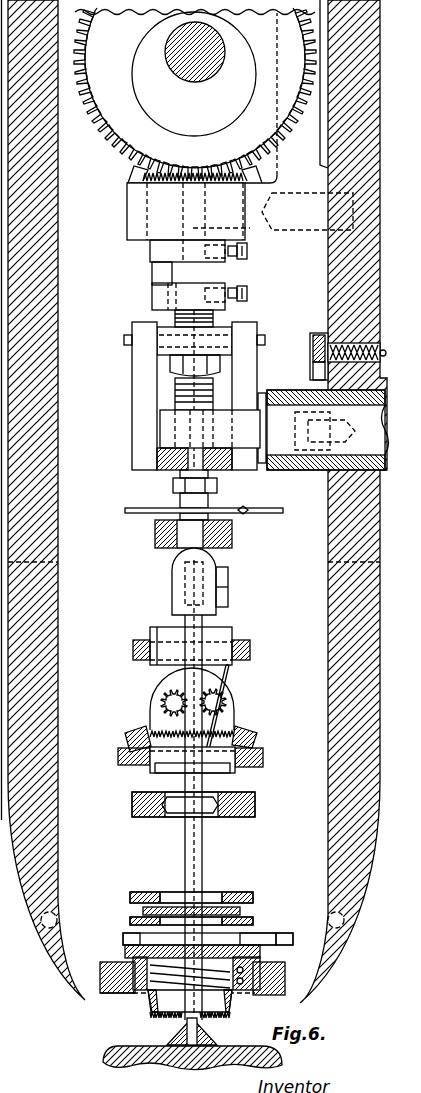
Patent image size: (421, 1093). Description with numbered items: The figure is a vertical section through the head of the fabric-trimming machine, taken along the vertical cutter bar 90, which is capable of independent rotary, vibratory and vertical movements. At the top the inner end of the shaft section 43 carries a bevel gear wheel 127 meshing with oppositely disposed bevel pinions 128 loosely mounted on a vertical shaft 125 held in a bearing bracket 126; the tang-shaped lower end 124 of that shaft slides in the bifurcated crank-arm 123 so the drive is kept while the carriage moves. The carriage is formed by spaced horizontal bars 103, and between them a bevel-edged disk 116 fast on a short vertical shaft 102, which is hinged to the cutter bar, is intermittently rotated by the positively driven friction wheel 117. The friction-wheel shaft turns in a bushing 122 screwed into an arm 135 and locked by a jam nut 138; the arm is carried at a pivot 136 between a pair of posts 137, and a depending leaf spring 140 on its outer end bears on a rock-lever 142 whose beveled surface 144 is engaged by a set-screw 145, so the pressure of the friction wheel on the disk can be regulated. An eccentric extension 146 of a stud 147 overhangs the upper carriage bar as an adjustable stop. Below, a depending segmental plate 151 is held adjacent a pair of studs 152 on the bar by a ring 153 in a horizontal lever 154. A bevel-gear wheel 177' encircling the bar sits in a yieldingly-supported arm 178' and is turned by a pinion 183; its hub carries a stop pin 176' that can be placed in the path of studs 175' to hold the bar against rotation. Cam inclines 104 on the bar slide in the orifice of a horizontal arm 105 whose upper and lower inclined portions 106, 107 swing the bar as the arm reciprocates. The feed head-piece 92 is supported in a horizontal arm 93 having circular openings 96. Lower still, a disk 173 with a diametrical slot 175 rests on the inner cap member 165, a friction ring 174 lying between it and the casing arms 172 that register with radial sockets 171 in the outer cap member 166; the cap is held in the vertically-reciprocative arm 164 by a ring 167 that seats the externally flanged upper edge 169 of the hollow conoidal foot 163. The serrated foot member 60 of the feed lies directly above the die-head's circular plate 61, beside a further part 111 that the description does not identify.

The shaft section 43 is at (191, 74).
The bevel gear wheel 127 is at (118, 135).
The bevel pinions 128 is at (133, 176).
The bearing bracket 126 is at (133, 222).
The vertical shaft 125 is at (252, 239).
The tang-shaped lower end 124 is at (152, 272).
The crank-arm 123 is at (152, 300).
The arm 135 is at (172, 340).
The pivot 136 is at (125, 340).
The posts 137 is at (135, 392).
The jam nut 138 is at (182, 360).
The bushing 122 is at (184, 395).
The eccentric extension 146 is at (184, 426).
The rock-lever 142 is at (321, 336).
The set-screw 145 is at (313, 352).
The beveled surface 144 is at (318, 372).
The stud 147 is at (325, 470).
The horizontal bars of the carriage 103 is at (168, 473).
The friction wheel 117 is at (158, 510).
The bevel-edged disk 116 is at (160, 520).
The short vertical shaft 102 is at (186, 551).
The ring 153 is at (150, 632).
The horizontal lever 154 is at (251, 646).
The depending segmental plate 151 is at (230, 697).
The pinion 183 is at (160, 703).
The studs 152 is at (186, 737).
The bevel-gear wheel 177' is at (217, 728).
The stop pin 176' is at (111, 755).
The yieldingly-supported arm 178' is at (276, 754).
The studs 175' is at (231, 768).
The horizontal arm 105 is at (256, 803).
The upper inclined portion 106 is at (170, 793).
The lower inclined portion 107 is at (168, 815).
The cam inclines 104 is at (203, 820).
The horizontal arm 93 is at (154, 892).
The circular openings 96 is at (175, 892).
The diametrical slot 175 is at (192, 890).
The radial sockets 171 is at (142, 937).
The disk 173 is at (254, 920).
The head-piece 92 is at (247, 912).
The inner cap member 165 is at (232, 962).
The inwardly projecting arms 172 is at (123, 938).
The outer cap member 166 is at (266, 935).
The vertically-reciprocative arm 164 is at (108, 974).
The friction ring 174 is at (145, 945).
The ring 167 is at (123, 993).
The leaf spring 140 is at (155, 978).
The hollow conoidal foot 163 is at (160, 1015).
The externally flanged upper edge 169 is at (233, 1007).
The serrated foot member 60 is at (250, 1067).
The valve stem 111 is at (178, 1050).
The circular plate 61 is at (103, 1062).
The cutter bar 90 is at (203, 845).